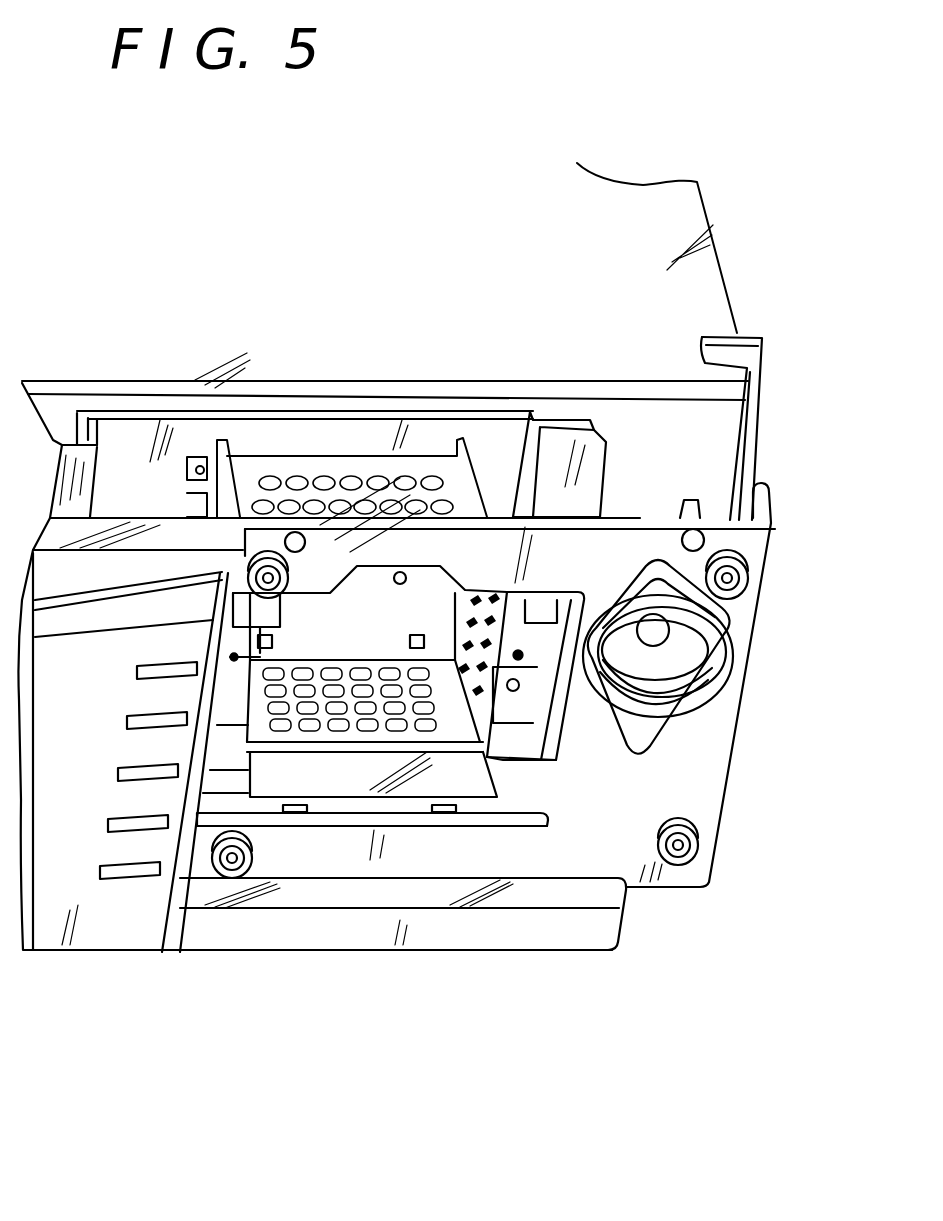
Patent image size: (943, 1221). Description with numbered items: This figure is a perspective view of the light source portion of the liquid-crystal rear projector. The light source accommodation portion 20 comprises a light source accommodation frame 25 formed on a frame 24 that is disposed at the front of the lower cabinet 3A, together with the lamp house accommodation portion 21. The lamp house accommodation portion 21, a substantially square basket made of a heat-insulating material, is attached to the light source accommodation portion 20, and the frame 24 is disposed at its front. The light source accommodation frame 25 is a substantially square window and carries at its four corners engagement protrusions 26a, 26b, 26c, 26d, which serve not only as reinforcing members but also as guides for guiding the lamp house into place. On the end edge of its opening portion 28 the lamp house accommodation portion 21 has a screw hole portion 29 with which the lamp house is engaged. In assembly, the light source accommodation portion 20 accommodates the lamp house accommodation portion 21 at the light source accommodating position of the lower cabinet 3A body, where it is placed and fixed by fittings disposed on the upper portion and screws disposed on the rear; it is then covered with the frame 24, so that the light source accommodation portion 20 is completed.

The lower cabinet 3A is at (757, 413).
The light source accommodation portion 20 is at (360, 853).
The lamp house accommodation portion 21 is at (336, 742).
The frame 24 is at (715, 803).
The light source accommodation frame 25 is at (508, 830).
The engagement protrusion 26a is at (222, 800).
The engagement protrusion 26b is at (240, 608).
The engagement protrusion 26c is at (555, 603).
The engagement protrusion 26d is at (527, 793).
The opening portion 28 is at (410, 787).
The screw hole portion 29 is at (517, 689).